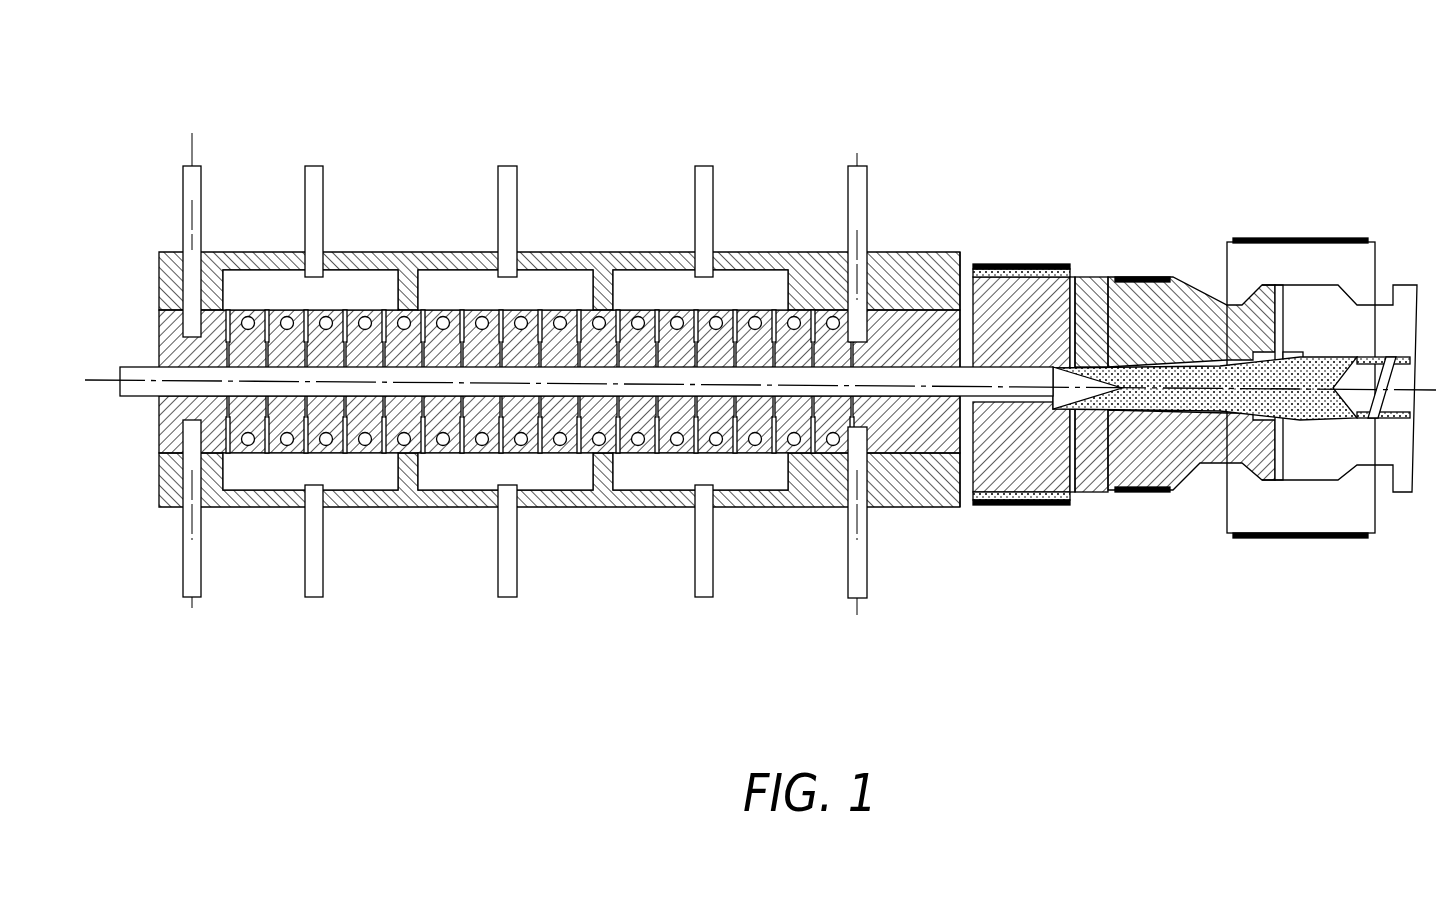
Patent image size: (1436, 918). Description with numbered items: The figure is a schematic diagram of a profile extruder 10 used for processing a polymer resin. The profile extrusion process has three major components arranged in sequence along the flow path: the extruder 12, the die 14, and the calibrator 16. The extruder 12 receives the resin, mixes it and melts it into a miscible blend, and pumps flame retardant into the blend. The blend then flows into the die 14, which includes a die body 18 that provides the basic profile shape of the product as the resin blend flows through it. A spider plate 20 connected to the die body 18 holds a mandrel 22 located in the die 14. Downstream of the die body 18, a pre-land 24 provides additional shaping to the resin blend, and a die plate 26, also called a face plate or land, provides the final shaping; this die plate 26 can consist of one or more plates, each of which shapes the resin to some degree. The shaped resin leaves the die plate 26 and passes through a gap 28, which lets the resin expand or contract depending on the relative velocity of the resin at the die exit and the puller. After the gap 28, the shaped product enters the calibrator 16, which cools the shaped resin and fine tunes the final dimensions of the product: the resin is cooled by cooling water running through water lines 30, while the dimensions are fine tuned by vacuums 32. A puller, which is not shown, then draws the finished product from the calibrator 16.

The profile extruder 10 is at (760, 387).
The extruder 12 is at (1237, 405).
The die 14 is at (1120, 405).
The calibrator 16 is at (537, 417).
The die body 18 is at (1191, 432).
The spider plate 20 is at (1085, 493).
The mandrel 22 is at (1108, 348).
The pre-land 24 is at (1073, 277).
The die plate 26 is at (1030, 262).
The gap 28 is at (960, 541).
The water lines 30 is at (815, 317).
The vacuums 32 is at (673, 285).